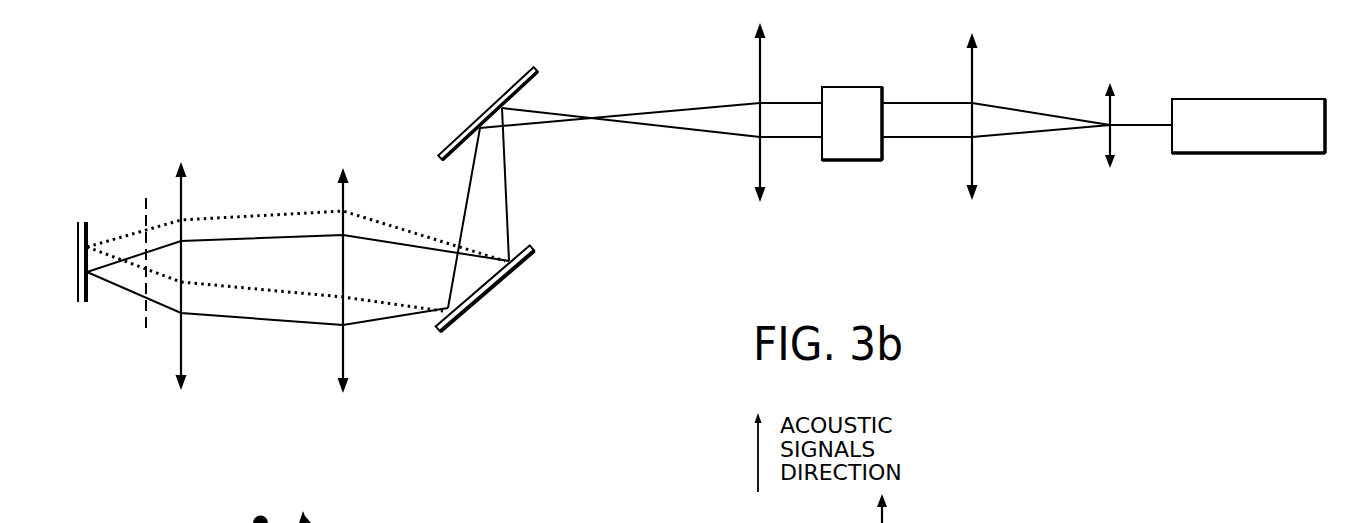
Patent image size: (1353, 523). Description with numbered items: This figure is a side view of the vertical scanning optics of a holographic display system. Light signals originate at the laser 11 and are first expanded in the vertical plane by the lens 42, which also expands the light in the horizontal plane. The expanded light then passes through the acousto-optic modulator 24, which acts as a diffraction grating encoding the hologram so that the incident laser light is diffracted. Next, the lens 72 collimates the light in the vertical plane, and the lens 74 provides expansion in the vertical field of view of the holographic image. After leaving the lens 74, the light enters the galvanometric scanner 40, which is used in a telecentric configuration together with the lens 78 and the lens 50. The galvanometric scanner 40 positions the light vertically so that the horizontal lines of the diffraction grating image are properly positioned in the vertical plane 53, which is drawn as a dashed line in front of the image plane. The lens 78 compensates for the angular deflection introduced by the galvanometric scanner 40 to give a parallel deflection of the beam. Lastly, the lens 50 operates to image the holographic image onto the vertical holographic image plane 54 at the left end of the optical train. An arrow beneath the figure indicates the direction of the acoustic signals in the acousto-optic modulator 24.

The laser 11 is at (1260, 154).
The acousto-optic modulator 24 is at (853, 160).
The galvanometric scanner 40 is at (455, 137).
The lens 42 is at (1110, 145).
The lens 50 is at (181, 367).
The vertical plane 53 is at (145, 285).
The vertical holographic image plane 54 is at (87, 233).
The lens 72 is at (972, 177).
The lens 74 is at (759, 182).
The lens 78 is at (343, 365).